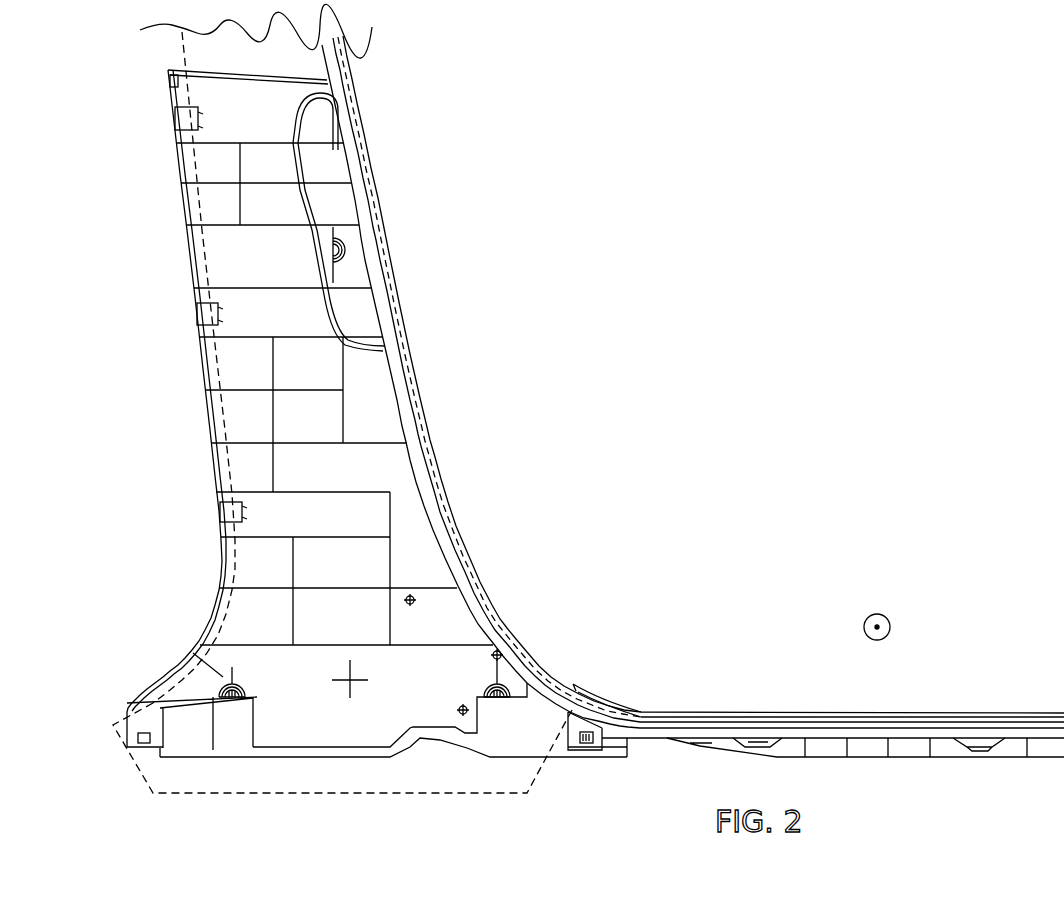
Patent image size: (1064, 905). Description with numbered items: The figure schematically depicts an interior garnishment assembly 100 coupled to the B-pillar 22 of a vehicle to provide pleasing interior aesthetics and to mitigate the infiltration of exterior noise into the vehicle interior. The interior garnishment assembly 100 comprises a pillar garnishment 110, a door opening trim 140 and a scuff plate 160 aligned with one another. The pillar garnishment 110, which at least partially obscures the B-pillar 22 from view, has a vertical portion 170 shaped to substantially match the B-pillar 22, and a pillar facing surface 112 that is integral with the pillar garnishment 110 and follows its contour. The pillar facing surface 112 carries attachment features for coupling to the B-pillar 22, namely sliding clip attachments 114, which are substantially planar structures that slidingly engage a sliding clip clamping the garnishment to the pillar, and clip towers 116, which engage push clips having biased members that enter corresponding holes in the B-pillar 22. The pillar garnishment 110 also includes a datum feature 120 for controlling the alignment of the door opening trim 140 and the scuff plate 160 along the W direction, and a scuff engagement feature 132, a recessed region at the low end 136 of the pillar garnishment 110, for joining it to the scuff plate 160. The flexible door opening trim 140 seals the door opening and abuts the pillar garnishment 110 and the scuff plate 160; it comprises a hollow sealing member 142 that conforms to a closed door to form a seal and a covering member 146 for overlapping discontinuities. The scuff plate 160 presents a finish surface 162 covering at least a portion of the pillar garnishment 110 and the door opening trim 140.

The interior garnishment assembly 100 is at (588, 421).
The pillar garnishment 110 is at (209, 416).
The pillar facing surface 112 is at (322, 428).
The sliding clip attachments 114 is at (175, 120).
The clip towers 116 is at (334, 257).
The datum feature 120 is at (377, 719).
The scuff engagement feature 132 is at (587, 761).
The low end 136 is at (618, 766).
The door opening trim 140 is at (698, 379).
The hollow sealing member 142 is at (400, 407).
The covering member 146 is at (443, 466).
The scuff plate 160 is at (613, 707).
The finish surface 162 is at (777, 713).
The vertical portion 170 is at (281, 526).
The B-pillar 22 is at (350, 795).
The W direction W is at (891, 631).